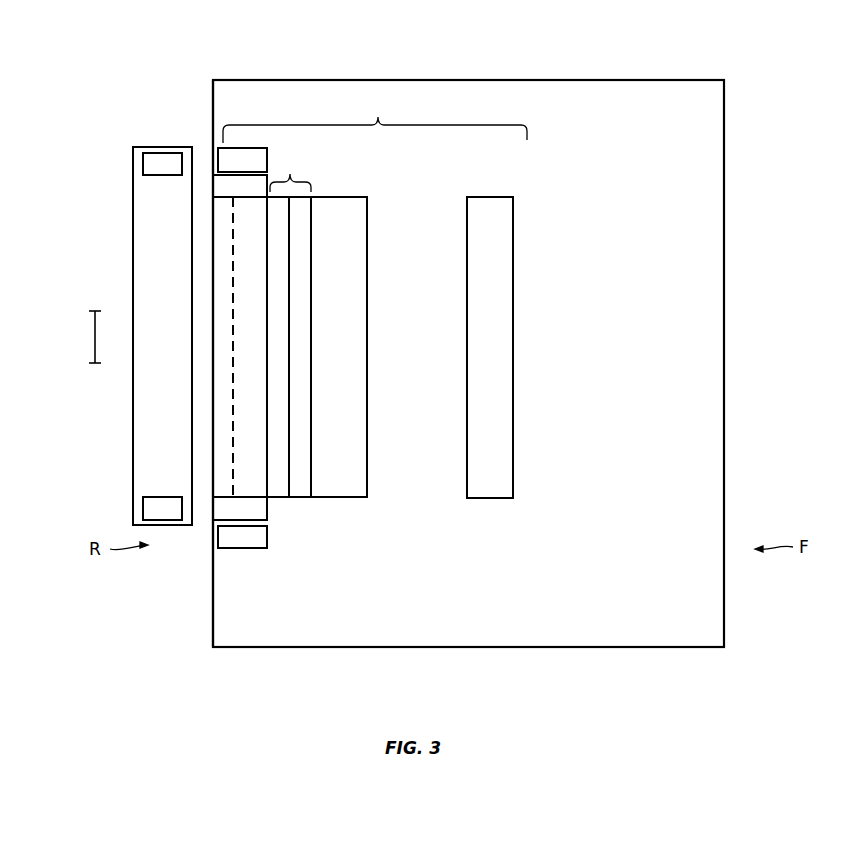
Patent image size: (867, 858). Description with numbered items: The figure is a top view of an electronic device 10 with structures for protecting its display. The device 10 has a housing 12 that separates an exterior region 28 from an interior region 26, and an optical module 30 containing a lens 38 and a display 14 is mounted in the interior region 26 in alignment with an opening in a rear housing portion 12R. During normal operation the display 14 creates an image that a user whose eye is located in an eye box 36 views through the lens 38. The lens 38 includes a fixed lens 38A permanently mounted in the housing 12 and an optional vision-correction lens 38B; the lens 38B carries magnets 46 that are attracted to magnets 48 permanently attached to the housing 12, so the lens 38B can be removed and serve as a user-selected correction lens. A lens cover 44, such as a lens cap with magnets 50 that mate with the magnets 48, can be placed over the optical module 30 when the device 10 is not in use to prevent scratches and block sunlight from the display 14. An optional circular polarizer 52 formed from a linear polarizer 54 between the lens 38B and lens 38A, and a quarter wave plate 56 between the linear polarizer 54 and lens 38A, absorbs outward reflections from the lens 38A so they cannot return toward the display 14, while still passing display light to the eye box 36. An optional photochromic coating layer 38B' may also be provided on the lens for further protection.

The device 10 is at (490, 664).
The housing 12 is at (690, 72).
The rear housing portion 12R is at (213, 99).
The display 14 is at (500, 360).
The interior region 26 is at (605, 624).
The exterior region 28 is at (770, 428).
The optical module 30 is at (375, 116).
The eye box 36 is at (95, 363).
The lens 38 is at (314, 581).
The lens 38A is at (354, 360).
The vision-correction lens 38B is at (316, 323).
The photochromic coating layer 38B' is at (133, 347).
The lens cover 44 is at (140, 256).
The magnets 46 is at (223, 190).
The magnets 48 is at (228, 153).
The magnets 50 is at (155, 167).
The circular polarizer 52 is at (290, 323).
The linear polarizer 54 is at (280, 488).
The quarter wave plate 56 is at (300, 488).